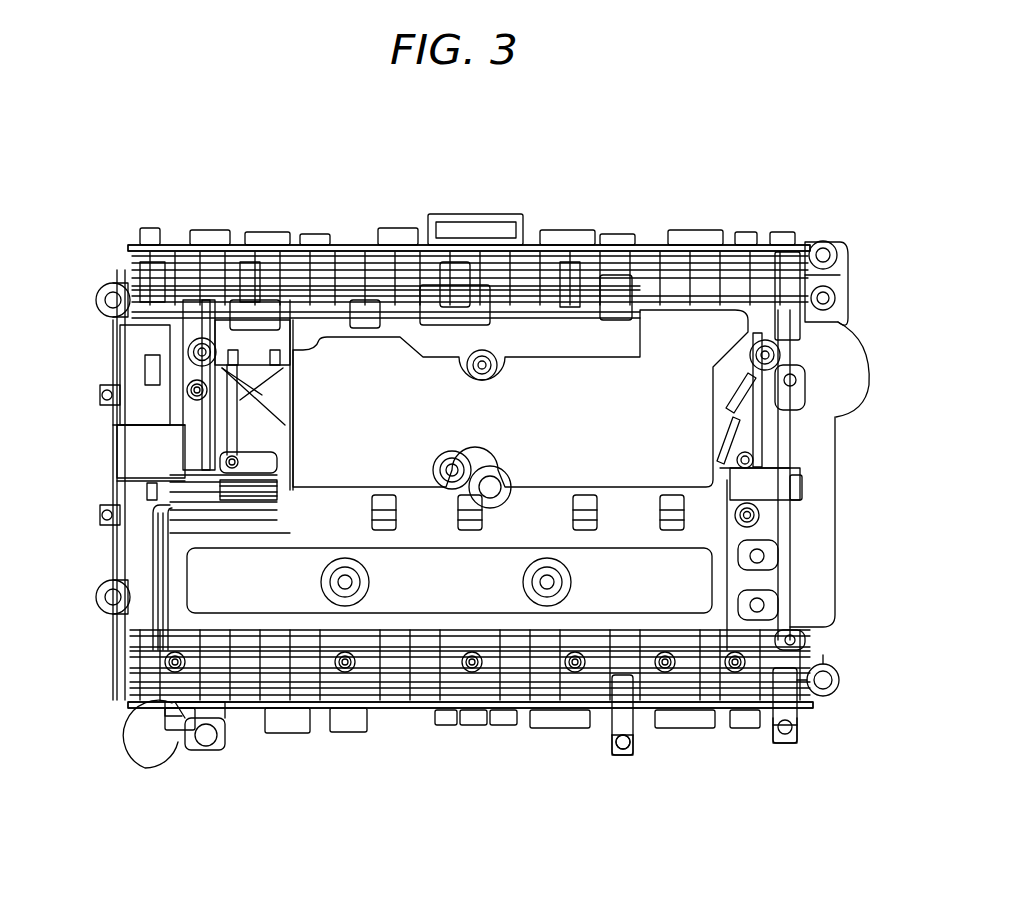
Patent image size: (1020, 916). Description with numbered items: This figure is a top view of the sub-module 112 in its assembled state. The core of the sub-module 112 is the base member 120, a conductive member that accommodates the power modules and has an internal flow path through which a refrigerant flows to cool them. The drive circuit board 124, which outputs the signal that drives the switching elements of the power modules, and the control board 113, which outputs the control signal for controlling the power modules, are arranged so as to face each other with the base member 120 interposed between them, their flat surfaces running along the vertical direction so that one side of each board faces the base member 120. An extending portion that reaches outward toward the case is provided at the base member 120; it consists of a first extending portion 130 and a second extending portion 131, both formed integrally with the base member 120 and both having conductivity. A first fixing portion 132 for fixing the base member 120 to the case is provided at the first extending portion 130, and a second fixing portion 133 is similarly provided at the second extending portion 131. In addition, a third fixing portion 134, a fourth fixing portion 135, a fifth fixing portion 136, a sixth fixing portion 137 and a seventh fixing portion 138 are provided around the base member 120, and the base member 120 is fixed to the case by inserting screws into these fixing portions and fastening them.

The sub-module 112 is at (303, 149).
The drive circuit board 124 is at (657, 245).
The fourth fixing portion 135 is at (835, 288).
The fifth fixing portion 136 is at (98, 290).
The sixth fixing portion 137 is at (98, 585).
The control board 113 is at (165, 715).
The seventh fixing portion 138 is at (210, 750).
The base member 120 is at (400, 712).
The first extending portion 130 is at (612, 728).
The second extending portion 131 is at (770, 730).
The first fixing portion 132 is at (623, 757).
The second fixing portion 133 is at (783, 745).
The third fixing portion 134 is at (828, 700).